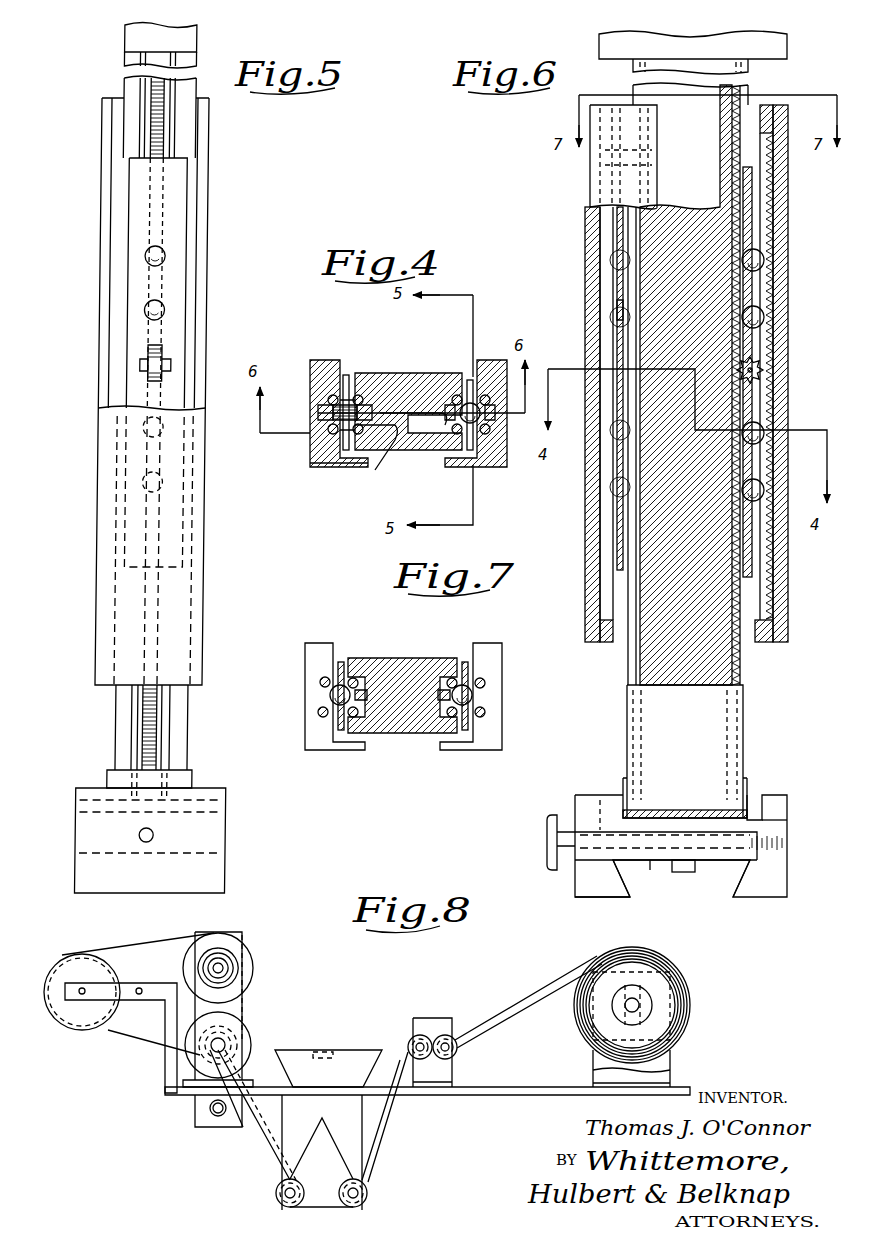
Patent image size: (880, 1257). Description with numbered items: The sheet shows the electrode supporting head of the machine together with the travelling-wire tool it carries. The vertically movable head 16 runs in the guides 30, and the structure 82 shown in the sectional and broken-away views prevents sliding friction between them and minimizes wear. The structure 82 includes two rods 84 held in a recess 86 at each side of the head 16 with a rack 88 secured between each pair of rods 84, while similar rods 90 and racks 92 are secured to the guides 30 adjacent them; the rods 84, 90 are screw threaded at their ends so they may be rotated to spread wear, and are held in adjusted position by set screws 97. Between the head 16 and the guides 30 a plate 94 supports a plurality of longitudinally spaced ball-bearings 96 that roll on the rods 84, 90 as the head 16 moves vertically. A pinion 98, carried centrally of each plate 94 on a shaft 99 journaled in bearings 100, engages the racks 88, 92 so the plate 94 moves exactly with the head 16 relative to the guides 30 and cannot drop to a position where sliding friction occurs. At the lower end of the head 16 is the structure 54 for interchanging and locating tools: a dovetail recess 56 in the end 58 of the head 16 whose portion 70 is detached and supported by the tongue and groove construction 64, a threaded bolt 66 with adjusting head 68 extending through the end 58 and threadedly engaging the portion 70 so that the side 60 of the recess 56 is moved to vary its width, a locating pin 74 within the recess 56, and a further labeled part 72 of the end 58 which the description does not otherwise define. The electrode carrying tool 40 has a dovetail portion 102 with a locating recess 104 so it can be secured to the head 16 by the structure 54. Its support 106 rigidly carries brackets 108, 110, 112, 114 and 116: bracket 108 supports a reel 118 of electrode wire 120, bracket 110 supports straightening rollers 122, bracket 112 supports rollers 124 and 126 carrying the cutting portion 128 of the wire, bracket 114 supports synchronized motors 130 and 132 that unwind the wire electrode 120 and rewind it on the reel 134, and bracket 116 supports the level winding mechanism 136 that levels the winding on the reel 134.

In FIG. 5, the head 16 is at (188, 722).
In FIG. 6, the head 16 is at (627, 705).
In FIG. 4, the head 16 is at (410, 373).
In FIG. 7, the head 16 is at (400, 733).
In FIG. 5, the guides 30 is at (174, 391).
In FIG. 6, the guides 30 is at (590, 170).
In FIG. 4, the guides 30 is at (320, 360).
In FIG. 7, the guides 30 is at (305, 665).
In FIG. 8, the electrode carrying tool 40 is at (145, 1137).
In FIG. 5, the structure for permitting interchanging of tools 54 is at (228, 825).
In FIG. 6, the structure for permitting interchanging of tools 54 is at (750, 902).
In FIG. 6, the dovetail recess 56 is at (650, 875).
In FIG. 6, the end of the head 58 is at (580, 900).
In FIG. 6, the side of the dovetail recess 60 is at (740, 890).
In FIG. 6, the tongue and groove construction 64 is at (765, 815).
In FIG. 6, the threaded bolt 66 is at (600, 815).
In FIG. 6, the adjusting head 68 is at (547, 835).
In FIG. 6, the portion of the dovetail recess 70 is at (787, 870).
In FIG. 6, the inclined face 72 is at (625, 892).
In FIG. 6, the locating pin 74 is at (680, 872).
In FIG. 5, the structure for preventing sliding friction 82 is at (181, 421).
In FIG. 4, the structure for preventing sliding friction 82 is at (332, 478).
In FIG. 5, the rods 84 is at (143, 712).
In FIG. 6, the rods 84 is at (740, 662).
In FIG. 4, the rods 84 is at (358, 395).
In FIG. 7, the rods 84 is at (452, 733).
In FIG. 4, the recess 86 is at (375, 470).
In FIG. 7, the recess 86 is at (353, 733).
In FIG. 5, the rack 88 is at (195, 118).
In FIG. 6, the rack 88 is at (735, 690).
In FIG. 4, the rack 88 is at (445, 425).
In FIG. 7, the rack 88 is at (380, 690).
In FIG. 6, the rods 90 is at (585, 618).
In FIG. 4, the rods 90 is at (485, 467).
In FIG. 7, the rods 90 is at (320, 705).
In FIG. 6, the racks 92 is at (772, 590).
In FIG. 4, the racks 92 is at (318, 413).
In FIG. 5, the plate 94 is at (123, 226).
In FIG. 6, the plate 94 is at (617, 528).
In FIG. 4, the plate 94 is at (346, 375).
In FIG. 7, the plate 94 is at (341, 662).
In FIG. 5, the ball-bearings 96 is at (158, 307).
In FIG. 6, the ball-bearings 96 is at (612, 262).
In FIG. 4, the ball-bearings 96 is at (468, 400).
In FIG. 7, the ball-bearings 96 is at (470, 698).
In FIG. 7, the set screws 97 is at (485, 683).
In FIG. 5, the pinion 98 is at (144, 352).
In FIG. 6, the pinion 98 is at (765, 362).
In FIG. 4, the pinion 98 is at (328, 398).
In FIG. 5, the shafts 99 is at (167, 360).
In FIG. 6, the shafts 99 is at (764, 376).
In FIG. 5, the bearings 100 is at (137, 368).
In FIG. 6, the bearings 100 is at (576, 310).
In FIG. 8, the dovetail portion 102 is at (292, 1050).
In FIG. 8, the locating recess 104 is at (330, 1050).
In FIG. 8, the support 106 is at (490, 1097).
In FIG. 8, the bracket 108 is at (668, 1068).
In FIG. 8, the bracket 110 is at (452, 1060).
In FIG. 8, the bracket 112 is at (362, 1157).
In FIG. 8, the bracket 114 is at (248, 1005).
In FIG. 8, the bracket 116 is at (160, 1060).
In FIG. 8, the reel 118 is at (690, 990).
In FIG. 8, the electrode wire 120 is at (540, 990).
In FIG. 8, the straightening rollers 122 is at (448, 1035).
In FIG. 8, the roller 124 is at (367, 1193).
In FIG. 8, the roller 126 is at (276, 1193).
In FIG. 8, the portion of the electrode wire 128 is at (290, 1205).
In FIG. 8, the motor 130 is at (190, 1083).
In FIG. 8, the motor 132 is at (245, 948).
In FIG. 8, the reel 134 is at (208, 950).
In FIG. 8, the level winding mechanism 136 is at (105, 1035).